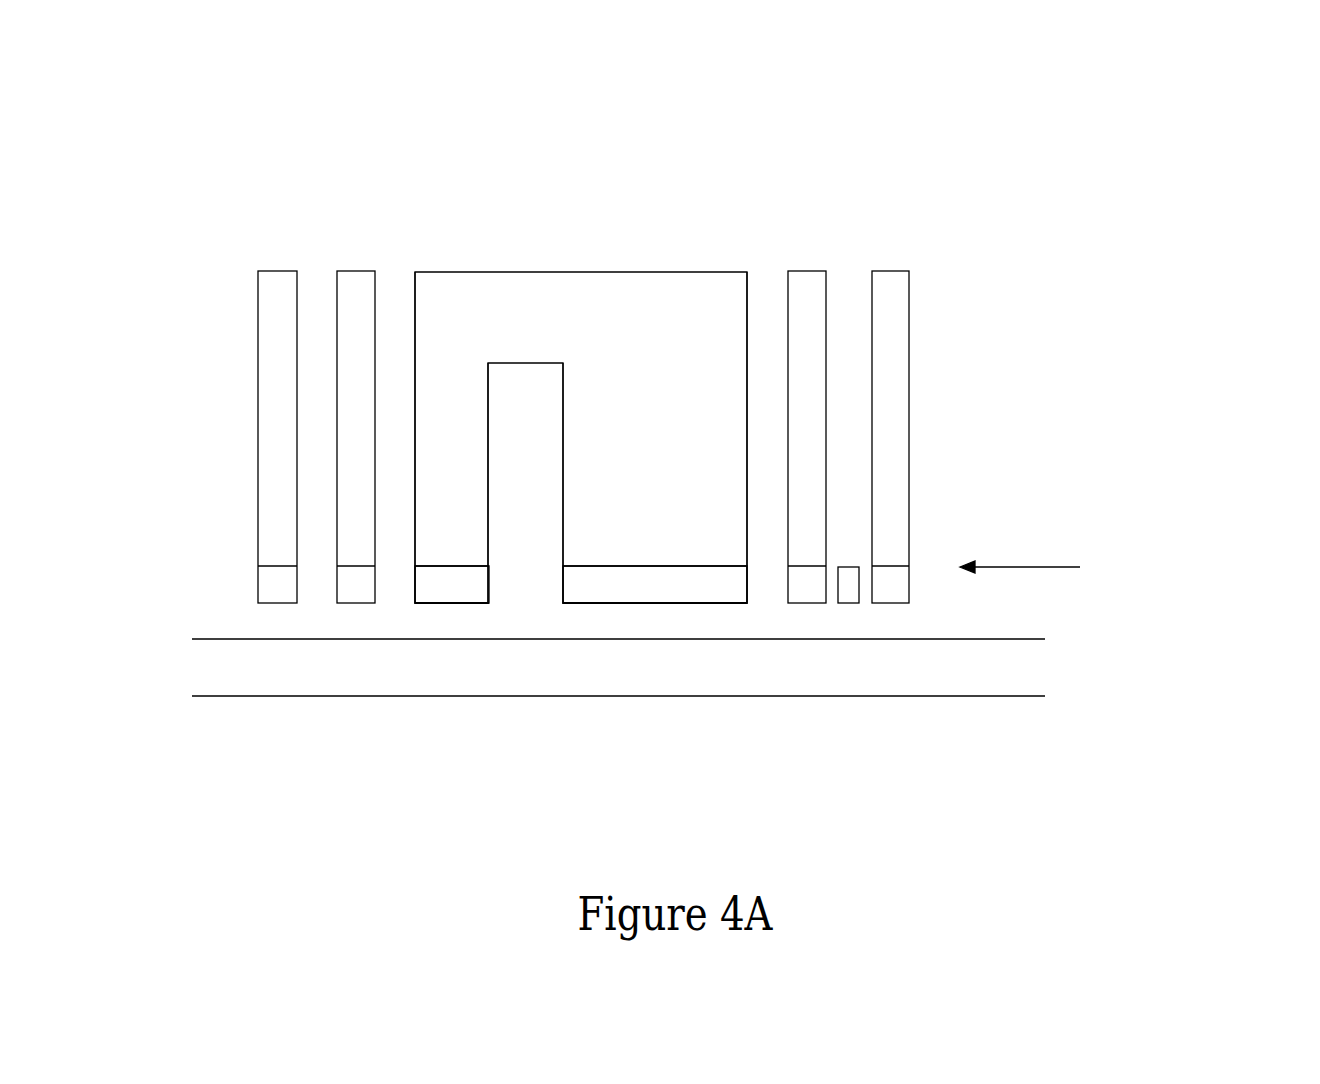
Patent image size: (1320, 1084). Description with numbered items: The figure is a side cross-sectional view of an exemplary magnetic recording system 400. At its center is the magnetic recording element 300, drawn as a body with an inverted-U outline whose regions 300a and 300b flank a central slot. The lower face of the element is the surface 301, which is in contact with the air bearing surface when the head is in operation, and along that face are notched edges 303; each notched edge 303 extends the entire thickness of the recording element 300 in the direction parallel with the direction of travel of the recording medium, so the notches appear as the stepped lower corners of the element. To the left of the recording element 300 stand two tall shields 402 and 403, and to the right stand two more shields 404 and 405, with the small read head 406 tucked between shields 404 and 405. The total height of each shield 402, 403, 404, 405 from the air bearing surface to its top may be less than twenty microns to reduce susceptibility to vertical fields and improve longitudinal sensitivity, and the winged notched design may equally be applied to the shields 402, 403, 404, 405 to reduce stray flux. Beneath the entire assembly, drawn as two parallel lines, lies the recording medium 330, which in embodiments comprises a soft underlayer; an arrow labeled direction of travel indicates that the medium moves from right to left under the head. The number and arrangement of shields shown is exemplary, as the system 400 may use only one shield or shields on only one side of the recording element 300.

The magnetic recording system 400 is at (215, 81).
The magnetic recording element 300 is at (692, 271).
The first portion of vehicle 300a is at (453, 418).
The second portion of vehicle 300b is at (655, 437).
The surface 301 is at (600, 614).
The notched edge 303 is at (453, 576).
The rails / direction of travel track 330 is at (968, 675).
The shield 402 is at (277, 271).
The shield 403 is at (355, 271).
The shield 404 is at (807, 271).
The shield 405 is at (891, 271).
The read head 406 is at (849, 616).